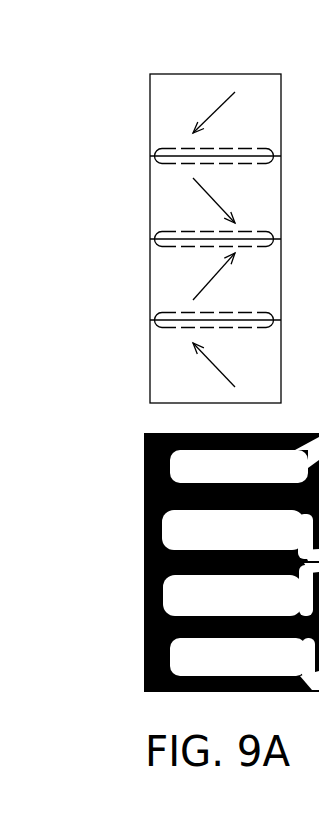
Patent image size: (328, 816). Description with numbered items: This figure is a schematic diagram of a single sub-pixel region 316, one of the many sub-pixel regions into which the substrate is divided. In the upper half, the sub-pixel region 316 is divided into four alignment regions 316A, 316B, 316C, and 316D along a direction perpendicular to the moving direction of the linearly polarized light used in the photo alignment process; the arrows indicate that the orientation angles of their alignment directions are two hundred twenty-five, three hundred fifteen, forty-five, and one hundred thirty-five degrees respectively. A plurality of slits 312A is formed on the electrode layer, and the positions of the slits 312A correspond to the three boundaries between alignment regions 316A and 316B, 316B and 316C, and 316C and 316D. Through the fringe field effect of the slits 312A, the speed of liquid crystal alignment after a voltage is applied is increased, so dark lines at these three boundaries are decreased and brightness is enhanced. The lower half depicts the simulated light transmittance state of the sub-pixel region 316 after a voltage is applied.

The sub-pixel region 316 is at (170, 73).
The alignment region 316A is at (163, 105).
The alignment region 316B is at (163, 205).
The alignment region 316C is at (163, 293).
The alignment region 316D is at (163, 380).
The slit 312A is at (162, 162).